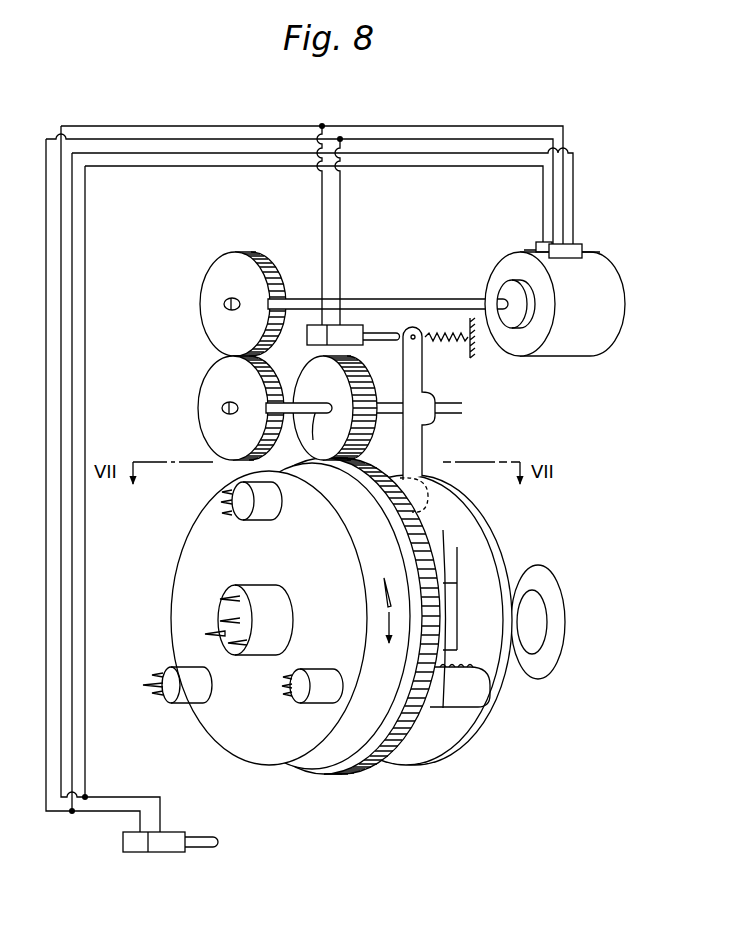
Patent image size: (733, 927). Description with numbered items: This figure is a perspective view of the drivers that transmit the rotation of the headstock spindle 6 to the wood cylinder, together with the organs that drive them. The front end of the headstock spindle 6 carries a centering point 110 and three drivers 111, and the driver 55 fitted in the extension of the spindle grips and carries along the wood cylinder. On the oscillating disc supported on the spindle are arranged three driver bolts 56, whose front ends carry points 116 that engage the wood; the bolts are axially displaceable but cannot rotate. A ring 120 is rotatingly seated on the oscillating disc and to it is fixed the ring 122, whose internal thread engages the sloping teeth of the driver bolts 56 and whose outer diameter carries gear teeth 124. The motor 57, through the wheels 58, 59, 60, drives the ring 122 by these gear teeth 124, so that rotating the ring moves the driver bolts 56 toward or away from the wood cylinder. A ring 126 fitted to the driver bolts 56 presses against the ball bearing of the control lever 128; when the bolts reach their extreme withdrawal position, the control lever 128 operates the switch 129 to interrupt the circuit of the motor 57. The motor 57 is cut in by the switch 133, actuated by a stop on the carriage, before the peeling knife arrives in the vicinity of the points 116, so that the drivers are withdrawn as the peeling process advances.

The headstock spindle 6 is at (518, 584).
The driver 55 is at (217, 607).
The driver bolts 56 is at (228, 500).
The motor 57 is at (572, 360).
The wheel 58 is at (214, 258).
The wheel 59 is at (204, 378).
The wheel 60 is at (302, 453).
The centering point 110 is at (210, 623).
The drivers 111 is at (192, 706).
The points 116 is at (287, 679).
The ring 120 is at (305, 767).
The ring 122 is at (331, 770).
The gear teeth 124 is at (373, 774).
The ring 126 is at (437, 769).
The control lever 128 is at (430, 452).
The switch 129 is at (355, 323).
The switch 133 is at (161, 855).